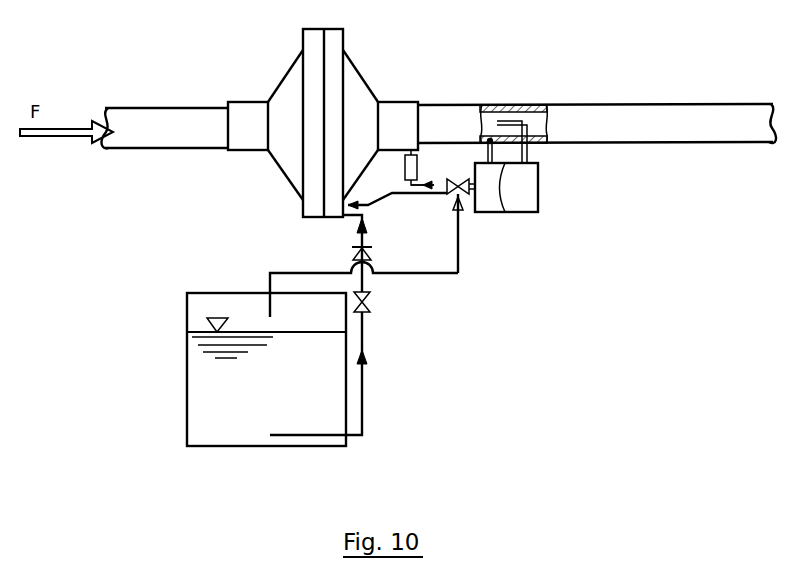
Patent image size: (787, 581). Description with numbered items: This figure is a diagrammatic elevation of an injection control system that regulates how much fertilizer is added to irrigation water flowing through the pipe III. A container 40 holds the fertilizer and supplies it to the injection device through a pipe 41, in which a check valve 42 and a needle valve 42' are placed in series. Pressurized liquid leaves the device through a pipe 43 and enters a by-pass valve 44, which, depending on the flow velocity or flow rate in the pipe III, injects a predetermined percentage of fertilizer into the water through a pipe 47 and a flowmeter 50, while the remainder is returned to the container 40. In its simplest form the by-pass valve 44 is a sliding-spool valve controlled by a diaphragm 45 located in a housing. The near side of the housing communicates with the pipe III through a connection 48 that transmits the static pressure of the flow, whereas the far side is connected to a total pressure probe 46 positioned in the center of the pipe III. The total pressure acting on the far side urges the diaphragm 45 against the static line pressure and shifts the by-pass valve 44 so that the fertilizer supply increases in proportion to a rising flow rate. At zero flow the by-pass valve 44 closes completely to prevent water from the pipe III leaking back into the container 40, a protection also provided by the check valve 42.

The container 40 is at (252, 429).
The pipe 41 is at (363, 402).
The check valve 42 is at (381, 267).
The needle valve 42' is at (389, 329).
The pipe 43 is at (392, 193).
The by-pass valve 44 is at (462, 190).
The diaphragm 45 is at (505, 183).
The total pressure probe 46 is at (518, 122).
The pipe 47 is at (432, 183).
The connection 48 is at (490, 140).
The flowmeter 50 is at (408, 150).
The pipe III is at (680, 130).